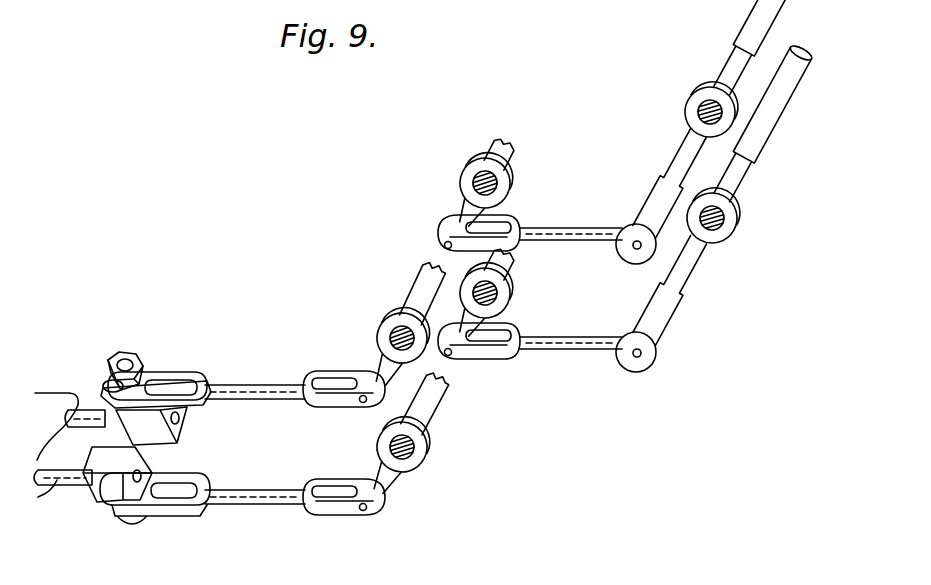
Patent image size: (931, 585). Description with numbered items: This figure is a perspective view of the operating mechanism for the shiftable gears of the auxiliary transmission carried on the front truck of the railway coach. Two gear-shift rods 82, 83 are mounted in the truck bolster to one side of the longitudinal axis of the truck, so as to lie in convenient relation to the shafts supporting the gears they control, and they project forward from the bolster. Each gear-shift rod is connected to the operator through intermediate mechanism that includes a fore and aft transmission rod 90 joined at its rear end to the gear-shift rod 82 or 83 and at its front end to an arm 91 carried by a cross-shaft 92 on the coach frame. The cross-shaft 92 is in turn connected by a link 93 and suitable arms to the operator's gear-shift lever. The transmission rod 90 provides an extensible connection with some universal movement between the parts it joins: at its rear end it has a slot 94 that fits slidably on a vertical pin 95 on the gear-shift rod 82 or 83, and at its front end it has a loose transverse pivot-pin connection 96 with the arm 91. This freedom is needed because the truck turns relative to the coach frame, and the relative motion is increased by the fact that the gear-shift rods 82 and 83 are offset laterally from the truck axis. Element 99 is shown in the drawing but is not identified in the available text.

The gear-shift rod 82 is at (98, 408).
The gear-shift rod 83 is at (76, 482).
The transmission rod 90 is at (253, 388).
The arm 91 is at (377, 357).
The cross-shaft 92 is at (420, 285).
The link 93 is at (583, 240).
The slot 94 is at (177, 382).
The vertical pin 95 is at (131, 353).
The pivot-pin connection 96 is at (362, 403).
The rod 99 is at (781, 10).